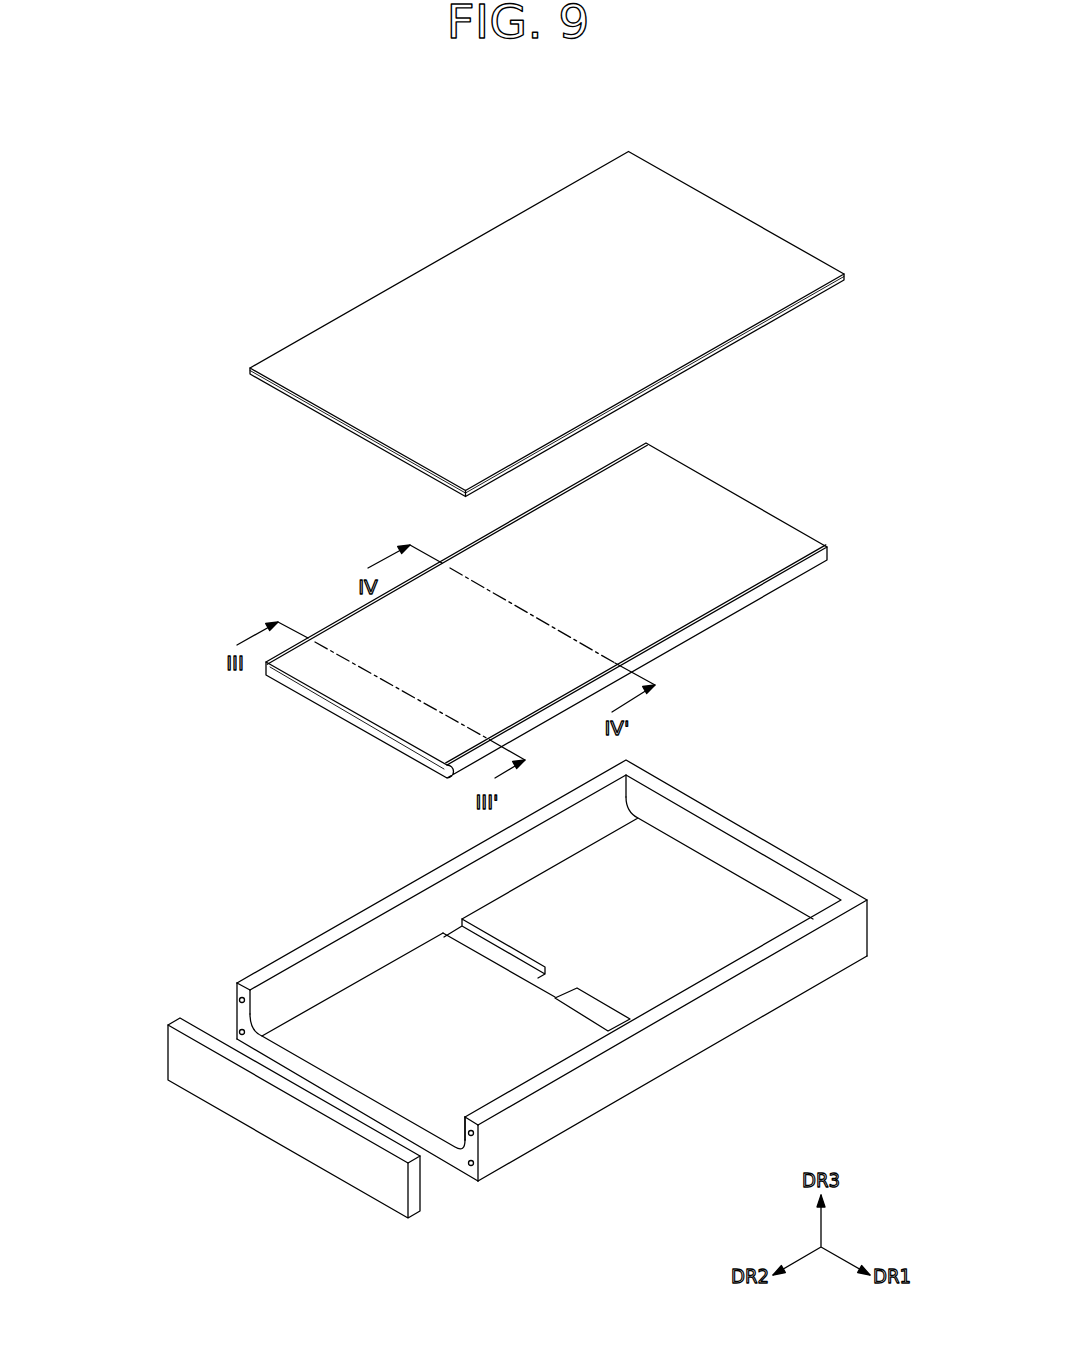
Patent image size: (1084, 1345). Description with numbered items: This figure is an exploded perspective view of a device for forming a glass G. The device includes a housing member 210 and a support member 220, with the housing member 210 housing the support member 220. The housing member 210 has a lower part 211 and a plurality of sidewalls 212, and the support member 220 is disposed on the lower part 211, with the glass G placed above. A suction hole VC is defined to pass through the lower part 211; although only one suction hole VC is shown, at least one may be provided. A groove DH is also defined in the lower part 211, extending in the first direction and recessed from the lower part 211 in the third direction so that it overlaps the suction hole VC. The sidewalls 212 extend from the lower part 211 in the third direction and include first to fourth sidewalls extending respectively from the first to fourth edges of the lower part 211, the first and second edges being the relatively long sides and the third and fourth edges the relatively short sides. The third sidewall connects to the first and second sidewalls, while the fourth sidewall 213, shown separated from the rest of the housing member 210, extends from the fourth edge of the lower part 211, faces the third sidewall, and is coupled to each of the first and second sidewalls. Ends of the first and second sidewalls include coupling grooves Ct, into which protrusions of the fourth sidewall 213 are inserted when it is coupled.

The glass G is at (718, 218).
The support member 220 is at (829, 551).
The housing member 210 is at (552, 994).
The lower part 211 is at (677, 867).
The sidewalls 212 is at (762, 876).
The fourth sidewall 213 is at (177, 1052).
The suction hole VC is at (556, 984).
The groove DH is at (598, 1004).
The coupling grooves Ct is at (472, 1168).